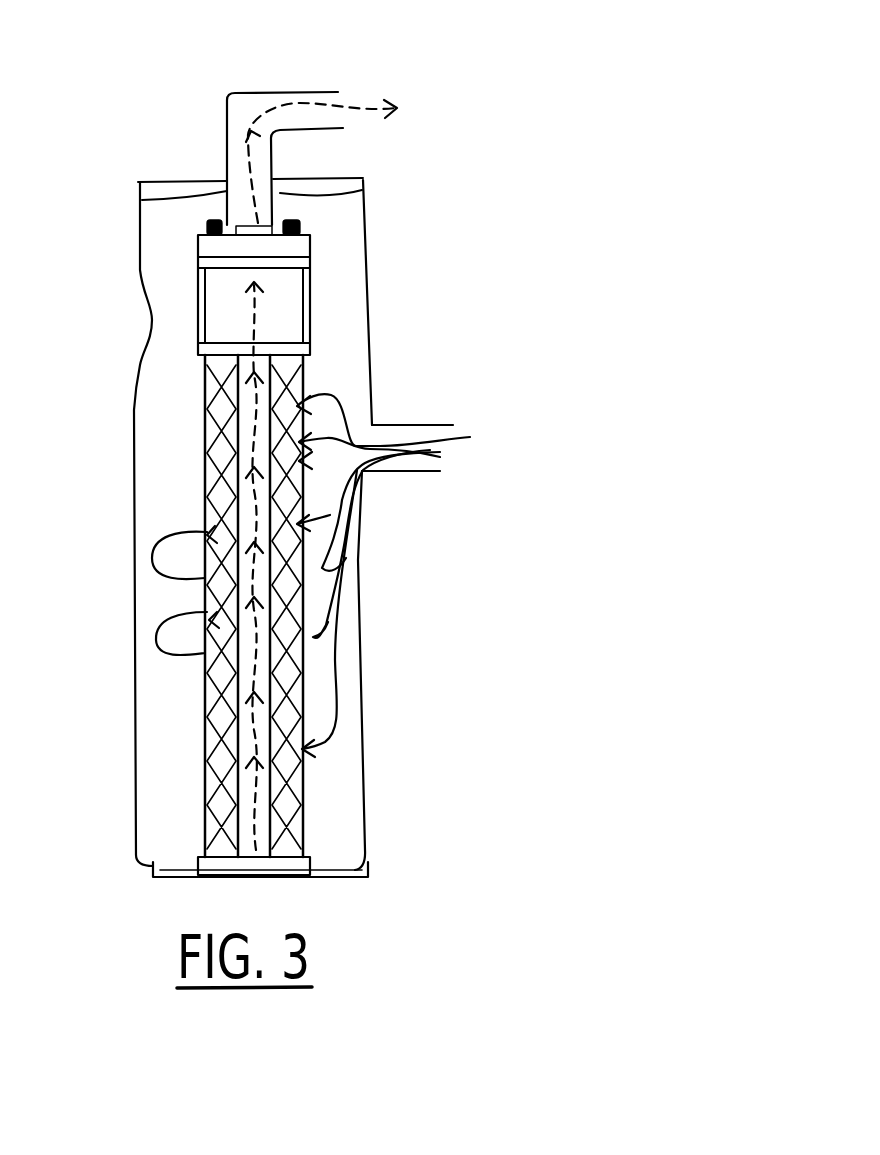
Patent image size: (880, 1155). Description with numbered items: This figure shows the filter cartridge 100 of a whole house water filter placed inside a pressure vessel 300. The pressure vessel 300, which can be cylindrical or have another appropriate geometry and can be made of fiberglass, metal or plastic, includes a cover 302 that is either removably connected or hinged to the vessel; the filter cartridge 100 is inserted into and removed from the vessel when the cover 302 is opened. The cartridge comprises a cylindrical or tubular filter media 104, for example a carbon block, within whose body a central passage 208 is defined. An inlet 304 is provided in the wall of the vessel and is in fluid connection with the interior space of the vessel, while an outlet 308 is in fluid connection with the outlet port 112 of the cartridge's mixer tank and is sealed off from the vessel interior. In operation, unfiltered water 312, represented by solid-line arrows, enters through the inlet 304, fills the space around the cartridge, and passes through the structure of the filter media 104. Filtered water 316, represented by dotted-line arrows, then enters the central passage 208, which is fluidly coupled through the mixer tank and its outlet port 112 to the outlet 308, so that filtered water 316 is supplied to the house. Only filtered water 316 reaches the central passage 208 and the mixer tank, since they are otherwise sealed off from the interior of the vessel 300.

The filter cartridge 100 is at (182, 433).
The filter media 104 is at (300, 807).
The outlet port 112 is at (262, 223).
The central passage 208 is at (253, 802).
The pressure vessel 300 is at (362, 243).
The cover 302 is at (145, 170).
The inlet 304 is at (456, 408).
The outlet 308 is at (302, 83).
The unfiltered water 312 is at (457, 457).
The filtered water 316 is at (393, 82).